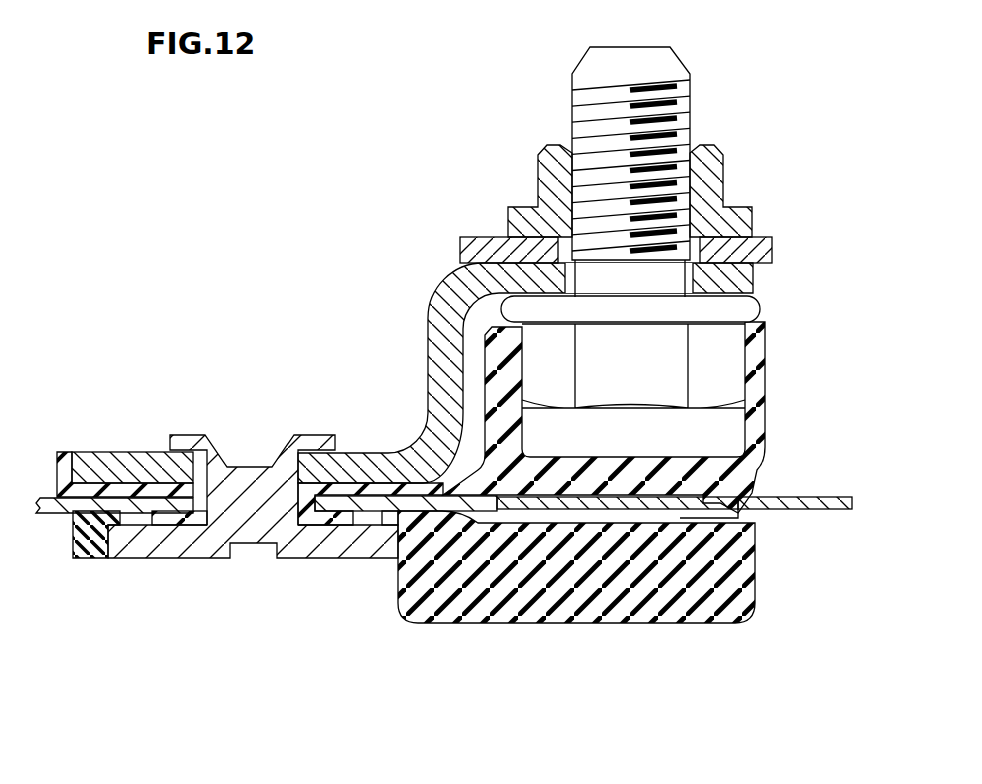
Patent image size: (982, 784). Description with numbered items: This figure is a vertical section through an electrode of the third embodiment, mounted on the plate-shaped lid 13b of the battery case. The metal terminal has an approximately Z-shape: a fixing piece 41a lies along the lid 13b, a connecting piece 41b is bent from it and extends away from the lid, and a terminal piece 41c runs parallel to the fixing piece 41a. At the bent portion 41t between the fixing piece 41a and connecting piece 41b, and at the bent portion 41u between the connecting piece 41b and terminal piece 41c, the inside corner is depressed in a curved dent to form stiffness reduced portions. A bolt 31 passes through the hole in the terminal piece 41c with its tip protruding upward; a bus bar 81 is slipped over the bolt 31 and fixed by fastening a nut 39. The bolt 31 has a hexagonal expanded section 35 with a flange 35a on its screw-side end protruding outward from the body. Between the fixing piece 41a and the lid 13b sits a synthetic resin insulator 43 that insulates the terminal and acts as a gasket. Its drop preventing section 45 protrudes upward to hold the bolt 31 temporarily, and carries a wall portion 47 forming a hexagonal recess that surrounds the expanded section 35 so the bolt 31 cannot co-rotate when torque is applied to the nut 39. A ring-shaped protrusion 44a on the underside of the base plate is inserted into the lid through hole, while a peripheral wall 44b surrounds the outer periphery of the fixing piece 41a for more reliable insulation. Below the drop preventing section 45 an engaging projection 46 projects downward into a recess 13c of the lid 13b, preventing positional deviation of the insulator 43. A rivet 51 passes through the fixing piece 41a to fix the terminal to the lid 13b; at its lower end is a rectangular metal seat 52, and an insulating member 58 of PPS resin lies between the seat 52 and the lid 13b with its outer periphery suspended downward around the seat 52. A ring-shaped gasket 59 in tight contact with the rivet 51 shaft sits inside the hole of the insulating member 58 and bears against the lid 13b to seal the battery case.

The bolt 31 is at (692, 110).
The nut 39 is at (710, 165).
The bus bar 81 is at (480, 248).
The terminal piece 41c is at (740, 272).
The bent portion 41u is at (452, 295).
The flange 35a is at (523, 312).
The expanded section 35 is at (540, 350).
The connecting piece 41b is at (447, 369).
The bent portion 41t is at (427, 453).
The drop preventing section 45 is at (598, 311).
The wall portion 47 is at (755, 360).
The insulator 43 is at (609, 404).
The peripheral wall 44b is at (65, 463).
The fixing piece 41a is at (133, 465).
The rivet 51 is at (252, 480).
The insulating member 58 is at (95, 545).
The seat 52 is at (140, 548).
The gasket 59 is at (187, 527).
The ring-shaped protrusion 44a is at (307, 505).
The engaging projection 46 is at (570, 498).
The recess 13c is at (652, 512).
The lid 13b is at (825, 502).